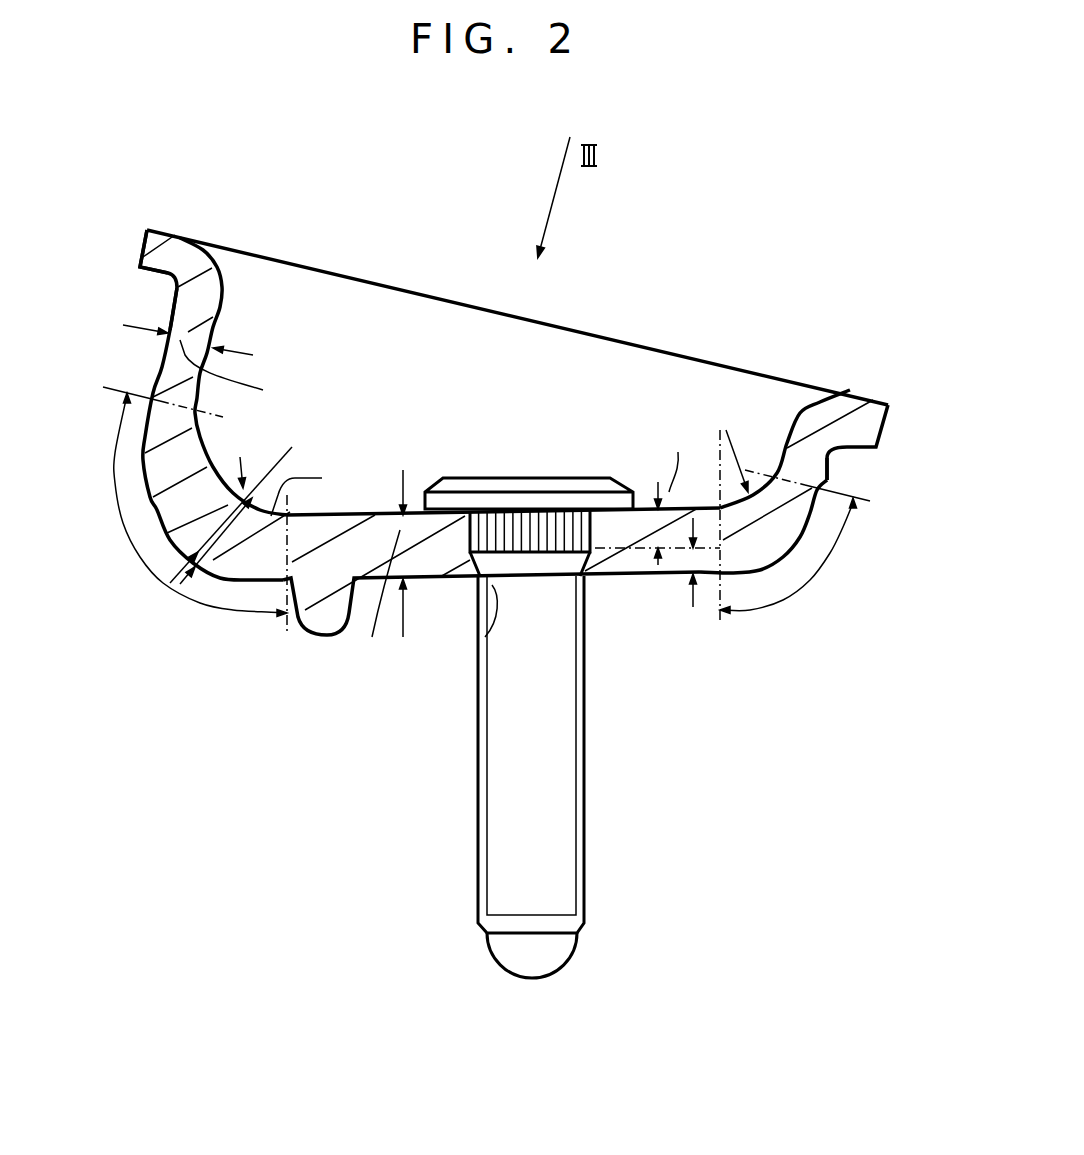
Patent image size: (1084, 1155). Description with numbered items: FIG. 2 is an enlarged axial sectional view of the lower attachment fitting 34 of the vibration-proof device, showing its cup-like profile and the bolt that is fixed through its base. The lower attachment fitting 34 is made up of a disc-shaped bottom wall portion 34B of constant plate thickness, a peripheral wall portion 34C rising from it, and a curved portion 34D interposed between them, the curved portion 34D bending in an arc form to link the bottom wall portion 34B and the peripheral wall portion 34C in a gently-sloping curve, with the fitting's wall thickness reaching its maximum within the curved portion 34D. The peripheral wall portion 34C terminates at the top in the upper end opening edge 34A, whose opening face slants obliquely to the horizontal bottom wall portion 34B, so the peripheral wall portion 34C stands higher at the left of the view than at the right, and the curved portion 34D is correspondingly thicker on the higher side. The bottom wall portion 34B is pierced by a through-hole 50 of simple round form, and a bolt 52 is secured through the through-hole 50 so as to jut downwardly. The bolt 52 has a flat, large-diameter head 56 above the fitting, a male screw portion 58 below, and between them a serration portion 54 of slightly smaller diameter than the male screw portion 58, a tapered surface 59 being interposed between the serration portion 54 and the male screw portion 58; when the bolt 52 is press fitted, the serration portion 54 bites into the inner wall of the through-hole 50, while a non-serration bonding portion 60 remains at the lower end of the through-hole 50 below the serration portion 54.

The lower attachment fitting 34 is at (778, 368).
The upper end opening edge 34A is at (148, 258).
The bottom wall portion 34B is at (637, 576).
The peripheral wall portion 34C is at (172, 307).
The curved portion 34D is at (153, 573).
The through-hole 50 is at (513, 681).
The bolt 52 is at (513, 777).
The serration portion 54 is at (562, 537).
The head 56 is at (530, 483).
The male screw portion 58 is at (553, 850).
The tapered surface 59 is at (547, 557).
The non-serration bonding portion 60 is at (485, 637).